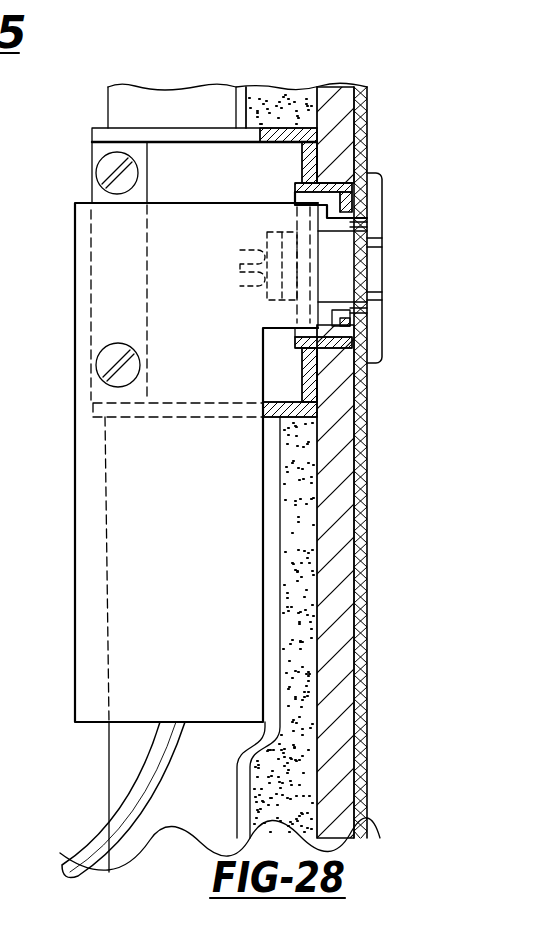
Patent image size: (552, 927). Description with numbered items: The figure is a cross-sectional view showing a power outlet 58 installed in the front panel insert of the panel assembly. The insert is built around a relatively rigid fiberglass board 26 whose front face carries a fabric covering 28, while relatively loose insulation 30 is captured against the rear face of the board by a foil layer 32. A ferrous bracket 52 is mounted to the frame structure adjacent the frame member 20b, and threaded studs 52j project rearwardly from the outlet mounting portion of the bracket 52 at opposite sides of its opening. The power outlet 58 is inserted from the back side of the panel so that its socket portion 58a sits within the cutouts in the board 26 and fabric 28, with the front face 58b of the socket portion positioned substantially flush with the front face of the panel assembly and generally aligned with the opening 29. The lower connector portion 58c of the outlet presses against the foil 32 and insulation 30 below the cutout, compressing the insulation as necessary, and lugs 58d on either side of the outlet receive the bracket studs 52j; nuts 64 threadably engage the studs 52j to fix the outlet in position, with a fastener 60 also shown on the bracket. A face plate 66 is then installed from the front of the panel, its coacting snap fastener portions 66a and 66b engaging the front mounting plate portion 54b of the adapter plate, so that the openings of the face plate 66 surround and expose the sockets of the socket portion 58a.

The window frame member 20b is at (172, 93).
The fiberglass board 26 is at (342, 683).
The fabric covering 28 is at (366, 753).
The opening 29 is at (405, 268).
The insulation material 30 is at (303, 789).
The foil layer 32 is at (236, 772).
The bracket 52 is at (93, 137).
The threaded studs 52j is at (238, 265).
The front mounting plate portion 54b is at (370, 203).
The power outlet 58 is at (77, 551).
The socket portion 58a is at (356, 293).
The front face 58b is at (378, 247).
The lower connector portion 58c is at (75, 446).
The lugs 58d is at (266, 297).
The screw fastener 60 is at (100, 167).
The nuts 64 is at (268, 247).
The face plate 66 is at (357, 207).
The snap fastener portion 66a is at (328, 218).
The snap fastener portion 66b is at (366, 330).